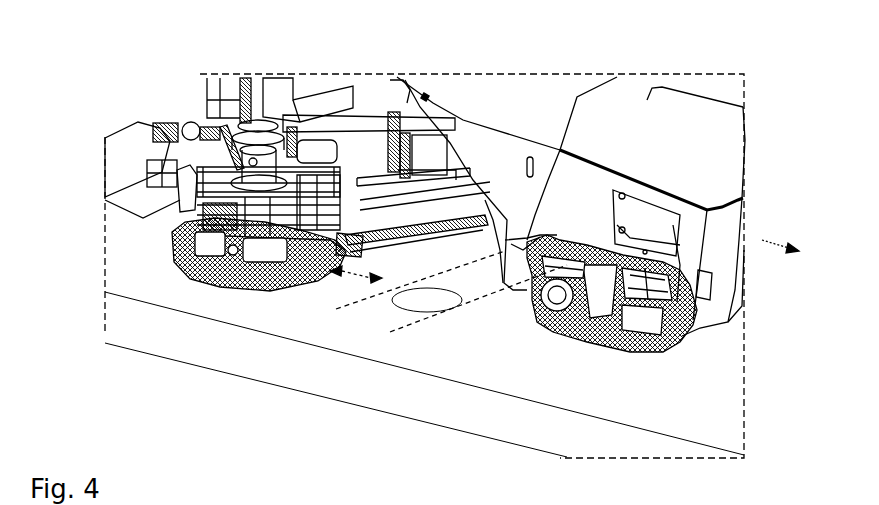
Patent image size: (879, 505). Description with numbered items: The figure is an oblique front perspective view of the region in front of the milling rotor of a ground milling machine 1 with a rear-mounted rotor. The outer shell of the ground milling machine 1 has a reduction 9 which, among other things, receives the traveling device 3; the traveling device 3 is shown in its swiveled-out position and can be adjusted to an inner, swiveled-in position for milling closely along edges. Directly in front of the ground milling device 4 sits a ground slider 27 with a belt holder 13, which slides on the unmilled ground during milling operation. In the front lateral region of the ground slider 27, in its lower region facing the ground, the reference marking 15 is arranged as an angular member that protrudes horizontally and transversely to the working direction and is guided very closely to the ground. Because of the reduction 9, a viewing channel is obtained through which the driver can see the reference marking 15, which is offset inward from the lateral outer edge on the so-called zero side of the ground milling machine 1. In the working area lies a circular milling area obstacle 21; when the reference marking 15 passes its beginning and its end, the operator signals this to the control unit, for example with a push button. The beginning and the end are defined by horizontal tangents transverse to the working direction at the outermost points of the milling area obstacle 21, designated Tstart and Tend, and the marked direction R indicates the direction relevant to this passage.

The ground milling machine 1 is at (664, 60).
The traveling device 3 is at (210, 280).
The ground milling device 4 is at (330, 205).
The reduction 9 is at (511, 244).
The belt holder 13 is at (364, 245).
The reference marking 15 is at (378, 277).
The milling area obstacle 21 is at (415, 300).
The ground slider 27 is at (383, 252).
The reference point R is at (340, 272).
The beginning tangent of the milling area obstacle Tstart is at (334, 310).
The end tangent of the milling area obstacle Tend is at (400, 332).